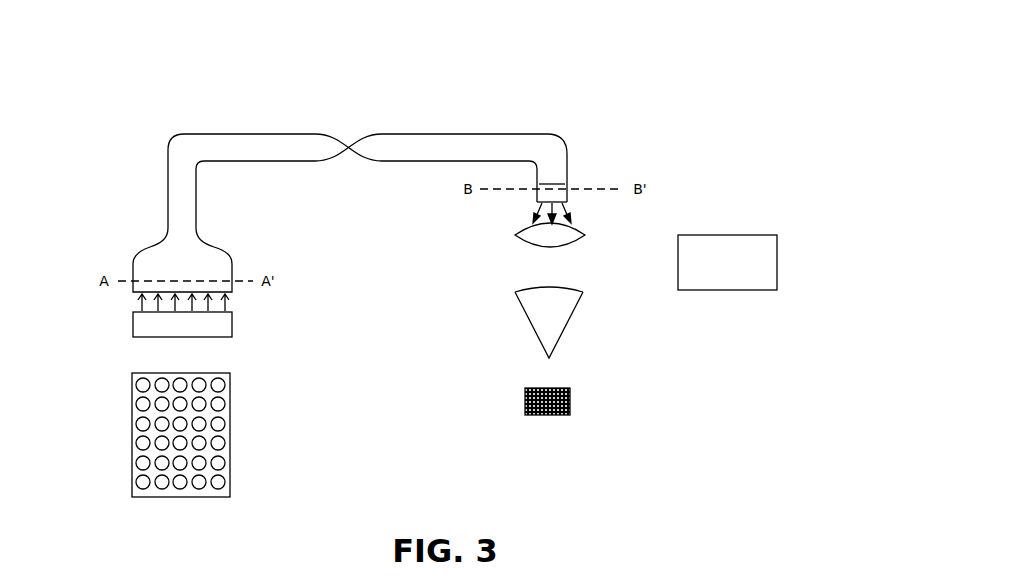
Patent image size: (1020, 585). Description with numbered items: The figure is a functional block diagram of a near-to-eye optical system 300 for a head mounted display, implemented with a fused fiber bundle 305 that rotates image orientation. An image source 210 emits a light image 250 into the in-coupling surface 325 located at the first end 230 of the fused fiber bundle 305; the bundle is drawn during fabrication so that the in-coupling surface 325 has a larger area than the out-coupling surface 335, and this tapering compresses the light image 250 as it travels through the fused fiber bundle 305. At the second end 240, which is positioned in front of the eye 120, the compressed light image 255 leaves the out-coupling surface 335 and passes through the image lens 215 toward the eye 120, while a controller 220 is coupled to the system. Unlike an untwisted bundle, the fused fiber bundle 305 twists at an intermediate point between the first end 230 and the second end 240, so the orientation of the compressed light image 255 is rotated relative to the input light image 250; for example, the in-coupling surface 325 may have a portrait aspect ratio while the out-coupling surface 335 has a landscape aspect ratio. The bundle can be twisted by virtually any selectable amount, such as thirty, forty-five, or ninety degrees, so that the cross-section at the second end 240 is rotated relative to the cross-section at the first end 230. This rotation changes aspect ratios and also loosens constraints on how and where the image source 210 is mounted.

The near-to-eye optical system 300 is at (645, 88).
The fused fiber bundle 305 is at (245, 155).
The first end 230 is at (169, 273).
The second end 240 is at (552, 185).
The compressed light image 255 is at (583, 217).
The image lens 215 is at (526, 246).
The controller 220 is at (568, 246).
The eye 120 is at (537, 321).
The out-coupling surface 335 is at (570, 405).
The image source 210 is at (170, 335).
The light image 250 is at (130, 302).
The in-coupling surface 325 is at (132, 425).